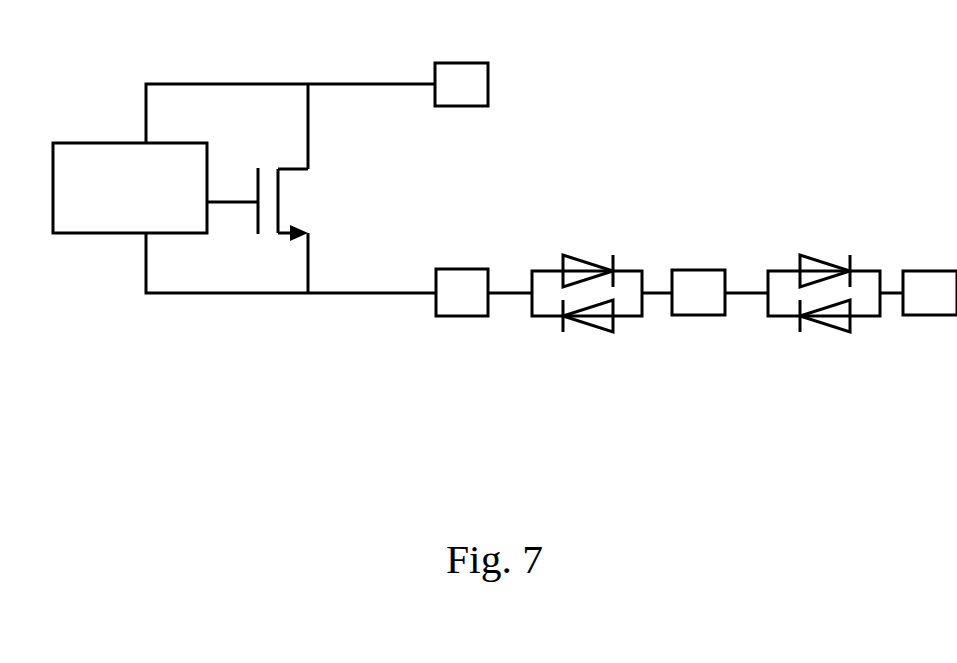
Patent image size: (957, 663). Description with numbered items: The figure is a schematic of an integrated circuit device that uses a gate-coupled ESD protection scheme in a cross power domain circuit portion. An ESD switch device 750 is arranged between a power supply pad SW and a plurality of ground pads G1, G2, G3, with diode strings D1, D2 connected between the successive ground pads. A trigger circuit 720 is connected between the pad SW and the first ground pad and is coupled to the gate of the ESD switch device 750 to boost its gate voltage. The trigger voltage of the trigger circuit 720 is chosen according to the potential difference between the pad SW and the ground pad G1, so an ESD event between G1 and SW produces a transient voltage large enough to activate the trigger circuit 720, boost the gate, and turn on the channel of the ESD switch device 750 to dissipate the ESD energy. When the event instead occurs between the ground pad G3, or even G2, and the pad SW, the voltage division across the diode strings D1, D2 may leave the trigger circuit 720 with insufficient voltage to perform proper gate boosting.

The trigger circuit 720 is at (130, 188).
The ESD switch device 750 is at (317, 200).
The power supply pad SW is at (457, 67).
The ground pad G1 is at (460, 311).
The diode string D1 is at (587, 275).
The ground pad G2 is at (698, 310).
The diode string D2 is at (824, 275).
The ground pad G3 is at (930, 311).